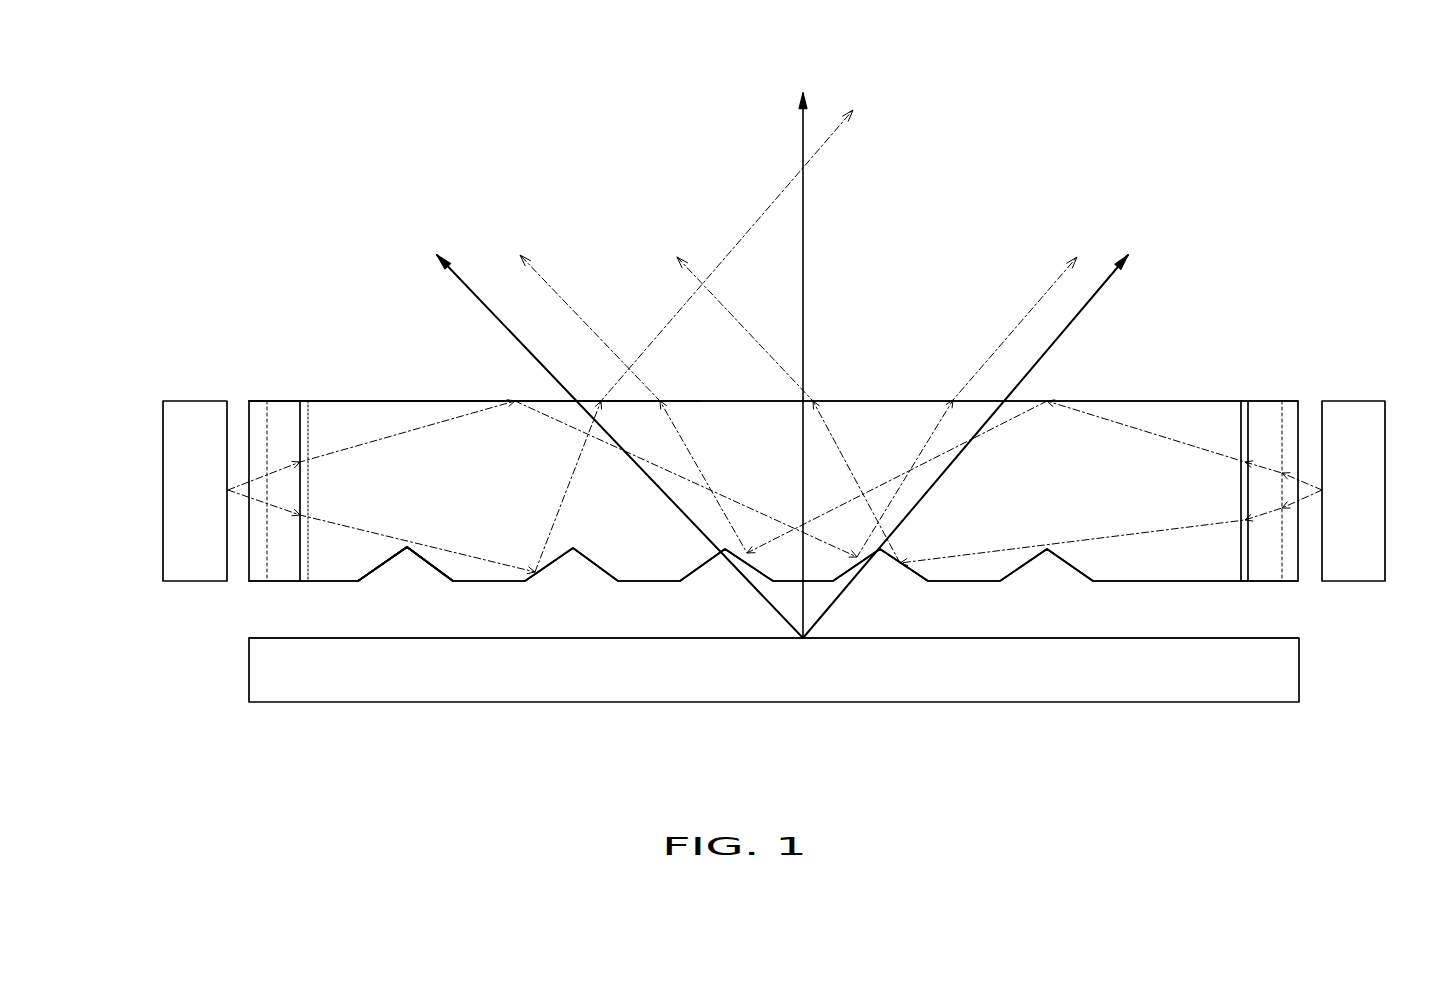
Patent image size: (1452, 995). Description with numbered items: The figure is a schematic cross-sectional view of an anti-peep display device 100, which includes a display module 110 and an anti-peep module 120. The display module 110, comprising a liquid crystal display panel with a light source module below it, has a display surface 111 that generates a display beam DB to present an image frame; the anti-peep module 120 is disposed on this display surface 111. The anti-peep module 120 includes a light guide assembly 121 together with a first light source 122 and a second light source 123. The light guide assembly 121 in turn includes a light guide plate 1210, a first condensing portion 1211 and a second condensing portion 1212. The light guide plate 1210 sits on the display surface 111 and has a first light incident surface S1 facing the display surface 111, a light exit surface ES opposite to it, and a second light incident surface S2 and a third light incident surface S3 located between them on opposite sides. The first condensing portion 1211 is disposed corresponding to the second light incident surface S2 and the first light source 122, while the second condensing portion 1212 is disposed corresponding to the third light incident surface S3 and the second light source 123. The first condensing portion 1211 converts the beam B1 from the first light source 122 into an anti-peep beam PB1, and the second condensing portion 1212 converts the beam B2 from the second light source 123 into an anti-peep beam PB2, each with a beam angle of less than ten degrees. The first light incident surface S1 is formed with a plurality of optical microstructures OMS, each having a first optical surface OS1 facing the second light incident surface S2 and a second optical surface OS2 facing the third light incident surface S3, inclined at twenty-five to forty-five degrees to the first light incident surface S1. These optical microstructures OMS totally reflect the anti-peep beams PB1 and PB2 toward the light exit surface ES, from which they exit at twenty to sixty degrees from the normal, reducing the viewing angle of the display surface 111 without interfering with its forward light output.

The anti-peep display device 100 is at (156, 175).
The display module 110 is at (1275, 668).
The display surface 111 is at (1260, 637).
The anti-peep module 120 is at (242, 322).
The light guide assembly 121 is at (238, 45).
The light guide plate 1210 is at (878, 412).
The first condensing portion 1211 is at (277, 413).
The second condensing portion 1212 is at (1282, 400).
The first light source 122 is at (177, 488).
The second light source 123 is at (1357, 490).
The first light incident surface S1 is at (1125, 583).
The second light incident surface S2 is at (303, 443).
The third light incident surface S3 is at (1245, 445).
The light exit surface ES is at (392, 401).
The first optical surface OS1 is at (380, 565).
The optical microstructure OMS is at (420, 558).
The second optical surface OS2 is at (438, 565).
The beam B1 is at (257, 477).
The beam B2 is at (1300, 465).
The display beam DB is at (800, 133).
The anti-peep beam PB1 is at (832, 130).
The anti-peep beam PB2 is at (552, 282).